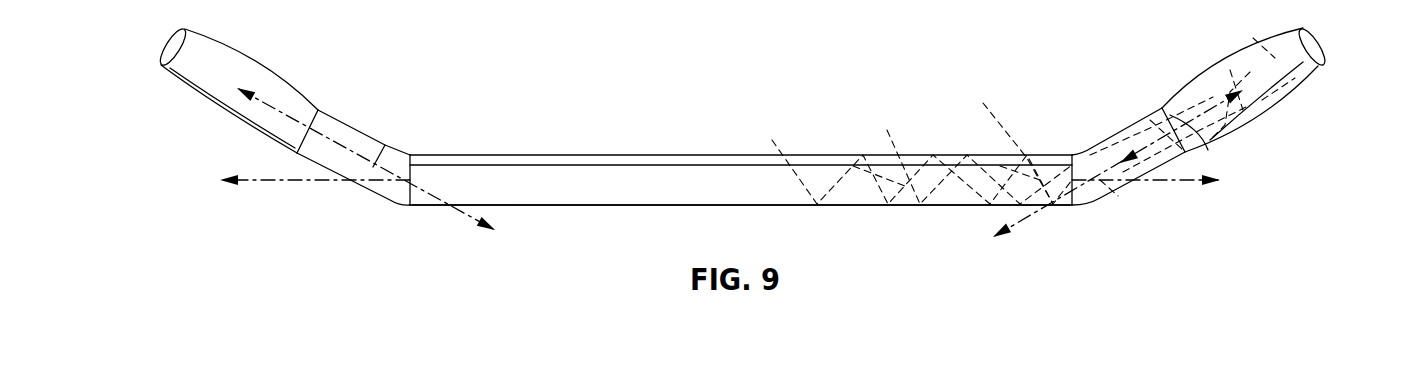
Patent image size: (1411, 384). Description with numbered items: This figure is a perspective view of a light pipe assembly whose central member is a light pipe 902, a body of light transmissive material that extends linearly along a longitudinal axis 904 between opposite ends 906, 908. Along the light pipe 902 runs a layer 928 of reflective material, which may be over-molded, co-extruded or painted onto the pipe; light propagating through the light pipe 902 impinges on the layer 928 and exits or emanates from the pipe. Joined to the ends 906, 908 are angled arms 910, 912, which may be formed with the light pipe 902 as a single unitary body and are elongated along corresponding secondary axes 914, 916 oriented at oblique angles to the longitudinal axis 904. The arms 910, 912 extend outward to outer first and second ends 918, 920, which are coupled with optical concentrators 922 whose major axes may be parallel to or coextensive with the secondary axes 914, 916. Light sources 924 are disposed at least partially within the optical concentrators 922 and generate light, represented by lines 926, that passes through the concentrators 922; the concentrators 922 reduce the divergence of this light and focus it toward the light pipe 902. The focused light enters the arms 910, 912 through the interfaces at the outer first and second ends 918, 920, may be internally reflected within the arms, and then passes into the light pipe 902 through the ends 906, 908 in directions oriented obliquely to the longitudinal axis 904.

The light pipe 902 is at (820, 155).
The longitudinal axis 904 is at (655, 182).
The end 906 is at (410, 193).
The end 908 is at (1072, 194).
The angled arm 910 is at (345, 118).
The angled arm 912 is at (1105, 138).
The secondary axis 914 is at (386, 144).
The secondary axis 916 is at (1213, 102).
The outer first end 918 is at (308, 127).
The outer second end 920 is at (1208, 150).
The optical concentrator 922 is at (212, 32).
The light source 924 is at (160, 43).
The lines 926 is at (1222, 46).
The layer 928 is at (550, 163).